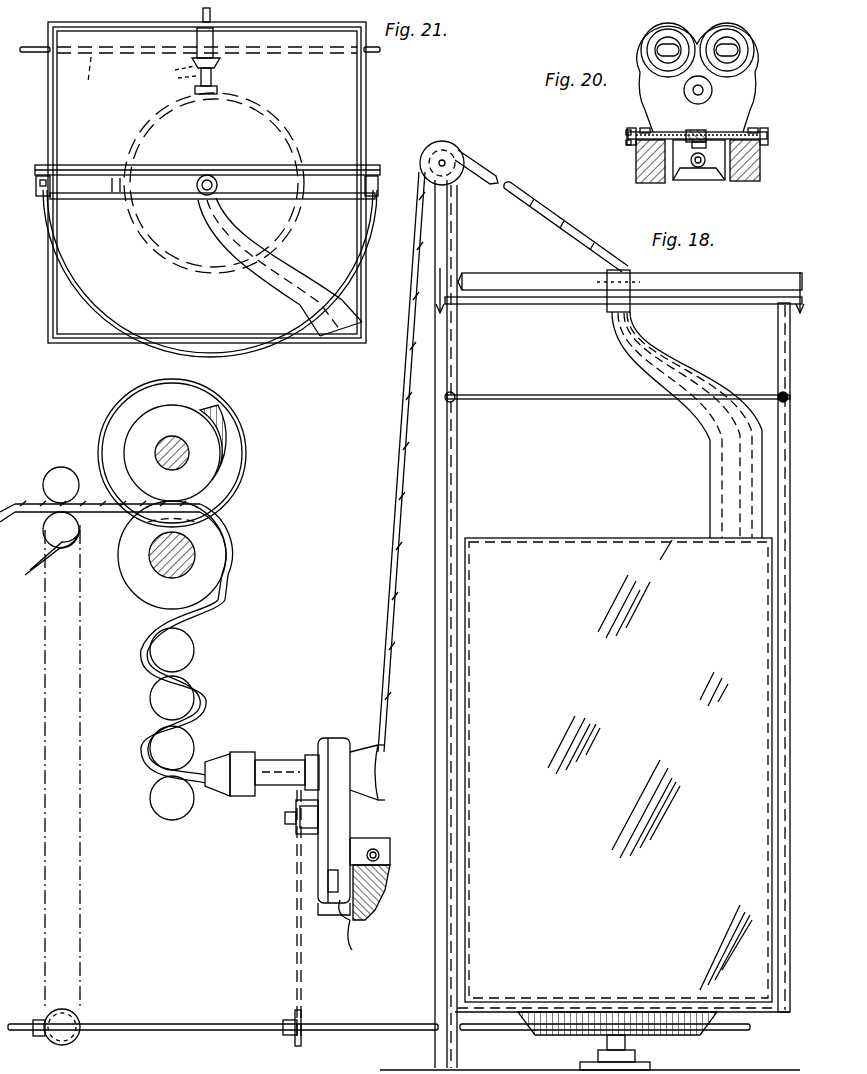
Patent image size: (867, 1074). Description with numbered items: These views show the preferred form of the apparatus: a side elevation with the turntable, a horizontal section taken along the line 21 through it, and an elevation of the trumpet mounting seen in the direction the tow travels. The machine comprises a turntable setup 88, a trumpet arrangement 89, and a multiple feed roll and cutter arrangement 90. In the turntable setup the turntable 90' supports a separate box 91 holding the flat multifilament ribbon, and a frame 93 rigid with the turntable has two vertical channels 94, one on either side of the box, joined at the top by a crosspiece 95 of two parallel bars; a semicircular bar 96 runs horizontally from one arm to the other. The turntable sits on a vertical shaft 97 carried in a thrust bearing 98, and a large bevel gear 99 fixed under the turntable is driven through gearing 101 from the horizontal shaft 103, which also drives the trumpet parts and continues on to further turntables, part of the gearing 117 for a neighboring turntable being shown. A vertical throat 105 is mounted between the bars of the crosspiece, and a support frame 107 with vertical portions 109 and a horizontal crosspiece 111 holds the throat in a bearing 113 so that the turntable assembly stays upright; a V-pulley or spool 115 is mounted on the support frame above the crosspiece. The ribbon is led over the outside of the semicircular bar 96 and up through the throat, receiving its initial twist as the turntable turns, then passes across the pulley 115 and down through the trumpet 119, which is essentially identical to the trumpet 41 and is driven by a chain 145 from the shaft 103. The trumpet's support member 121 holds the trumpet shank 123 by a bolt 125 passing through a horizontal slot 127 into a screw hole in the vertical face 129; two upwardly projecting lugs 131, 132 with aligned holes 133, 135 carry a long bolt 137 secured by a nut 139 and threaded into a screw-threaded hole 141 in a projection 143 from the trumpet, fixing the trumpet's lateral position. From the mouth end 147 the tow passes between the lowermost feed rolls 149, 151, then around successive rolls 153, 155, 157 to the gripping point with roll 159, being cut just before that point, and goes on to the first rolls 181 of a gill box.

In FIG. 18, the section line 21 is at (618, 301).
In FIG. 18, the trumpet 41 is at (540, 208).
In FIG. 21, the turntable setup 88 is at (50, 88).
In FIG. 18, the turntable setup 88 is at (750, 1030).
In FIG. 20, the trumpet arrangement 89 is at (757, 35).
In FIG. 18, the trumpet arrangement 89 is at (328, 738).
In FIG. 18, the multiple feed roll and cutter arrangement 90 is at (140, 550).
In FIG. 21, the turntable 90' is at (231, 182).
In FIG. 18, the turntable 90' is at (622, 1036).
In FIG. 21, the box 91 is at (366, 78).
In FIG. 18, the box 91 is at (478, 538).
In FIG. 21, the frame 93 is at (36, 196).
In FIG. 18, the frame 93 is at (458, 472).
In FIG. 21, the vertical channels 94 is at (35, 182).
In FIG. 18, the vertical channels 94 is at (778, 356).
In FIG. 21, the crosspiece 95 is at (84, 164).
In FIG. 18, the crosspiece 95 is at (556, 304).
In FIG. 21, the semicircular bar 96 is at (240, 350).
In FIG. 18, the semicircular bar 96 is at (592, 399).
In FIG. 18, the vertical shaft 97 is at (626, 1046).
In FIG. 18, the thrust bearing 98 is at (598, 1055).
In FIG. 18, the large bevel gear 99 is at (540, 1036).
In FIG. 21, the gearing 101 is at (167, 76).
In FIG. 21, the horizontal shaft 103 is at (86, 81).
In FIG. 18, the horizontal shaft 103 is at (230, 1030).
In FIG. 21, the vertical throat 105 is at (218, 186).
In FIG. 18, the vertical throat 105 is at (632, 312).
In FIG. 18, the support frame 107 is at (430, 905).
In FIG. 18, the vertical portions 109 is at (430, 952).
In FIG. 18, the horizontal crosspiece 111 is at (482, 273).
In FIG. 18, the bearing 113 is at (630, 272).
In FIG. 18, the V-pulley or spool 115 is at (452, 146).
In FIG. 21, the gearing 117 is at (222, 48).
In FIG. 20, the trumpet 119 is at (746, 86).
In FIG. 18, the trumpet 119 is at (338, 740).
In FIG. 20, the support member 121 is at (762, 165).
In FIG. 18, the support member 121 is at (388, 860).
In FIG. 20, the trumpet shank 123 is at (698, 180).
In FIG. 18, the trumpet shank 123 is at (348, 915).
In FIG. 20, the bolt 125 is at (673, 178).
In FIG. 18, the bolt 125 is at (328, 888).
In FIG. 20, the horizontal slot 127 is at (722, 180).
In FIG. 18, the vertical face 129 is at (350, 938).
In FIG. 20, the lug 131 is at (626, 124).
In FIG. 18, the lug 131 is at (372, 838).
In FIG. 20, the lug 132 is at (766, 128).
In FIG. 20, the hole 133 is at (645, 128).
In FIG. 20, the hole 135 is at (752, 128).
In FIG. 20, the long bolt 137 is at (768, 136).
In FIG. 20, the nut 139 is at (627, 135).
In FIG. 20, the screw-threaded hole 141 is at (702, 132).
In FIG. 20, the projection 143 is at (690, 130).
In FIG. 18, the chain 145 is at (290, 956).
In FIG. 18, the mouth end 147 is at (206, 760).
In FIG. 18, the feed roll 149 is at (152, 804).
In FIG. 18, the feed roll 151 is at (196, 732).
In FIG. 18, the feed roll 153 is at (150, 698).
In FIG. 18, the feed roll 155 is at (194, 644).
In FIG. 18, the feed roll 157 is at (205, 545).
In FIG. 18, the feed roll 159 is at (222, 404).
In FIG. 18, the first rolls 181 is at (62, 467).